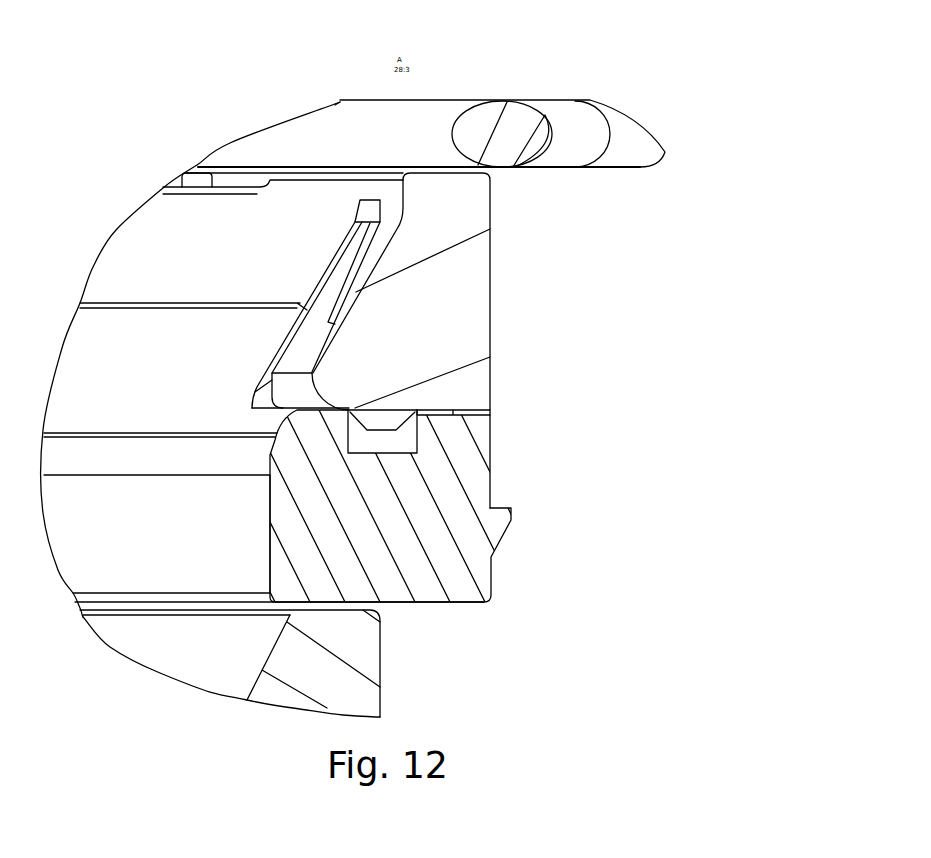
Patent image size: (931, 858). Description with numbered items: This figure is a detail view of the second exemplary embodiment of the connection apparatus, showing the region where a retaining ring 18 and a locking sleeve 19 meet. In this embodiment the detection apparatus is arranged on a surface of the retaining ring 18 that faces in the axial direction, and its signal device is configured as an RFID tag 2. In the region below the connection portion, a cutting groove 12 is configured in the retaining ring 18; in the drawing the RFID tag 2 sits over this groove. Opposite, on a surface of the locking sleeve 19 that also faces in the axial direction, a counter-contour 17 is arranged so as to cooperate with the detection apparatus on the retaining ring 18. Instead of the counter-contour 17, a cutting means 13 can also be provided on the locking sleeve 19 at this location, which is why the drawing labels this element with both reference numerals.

The RFID tag 2 is at (435, 407).
The cutting groove 12 is at (385, 443).
The cutting means 13 is at (382, 417).
The counter-contour 17 is at (710, 232).
The retaining ring 18 is at (443, 573).
The locking sleeve 19 is at (448, 200).